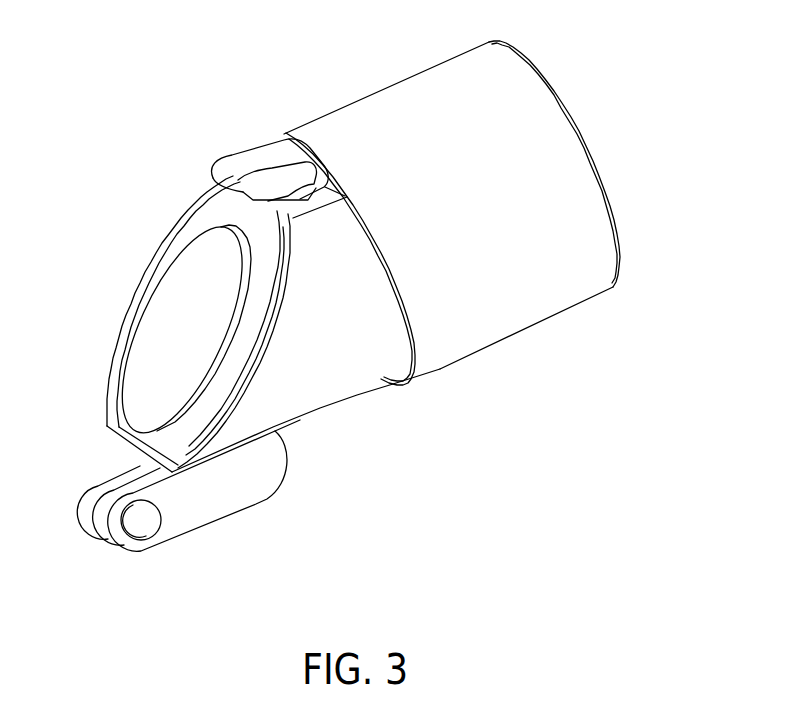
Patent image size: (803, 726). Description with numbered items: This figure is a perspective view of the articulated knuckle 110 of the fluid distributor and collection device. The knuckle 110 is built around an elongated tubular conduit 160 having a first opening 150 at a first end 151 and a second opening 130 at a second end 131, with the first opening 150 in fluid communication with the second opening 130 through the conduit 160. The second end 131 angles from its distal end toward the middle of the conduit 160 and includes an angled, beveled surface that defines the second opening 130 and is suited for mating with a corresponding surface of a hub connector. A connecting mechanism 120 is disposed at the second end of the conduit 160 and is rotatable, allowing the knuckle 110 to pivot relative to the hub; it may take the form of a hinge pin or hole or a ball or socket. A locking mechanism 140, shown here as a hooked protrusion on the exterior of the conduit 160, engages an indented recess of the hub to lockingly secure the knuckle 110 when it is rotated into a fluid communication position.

The articulated knuckle 110 is at (140, 113).
The connecting mechanism 120 is at (213, 516).
The second opening 130 is at (106, 296).
The second end 131 is at (197, 201).
The locking mechanism 140 is at (258, 160).
The first opening 150 is at (601, 139).
The first end 151 is at (541, 72).
The elongated tubular conduit 160 is at (353, 393).